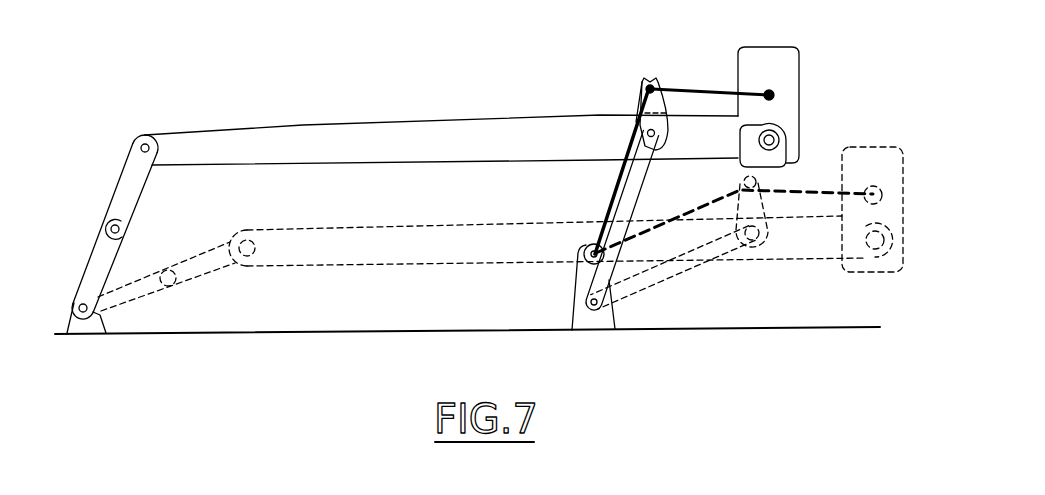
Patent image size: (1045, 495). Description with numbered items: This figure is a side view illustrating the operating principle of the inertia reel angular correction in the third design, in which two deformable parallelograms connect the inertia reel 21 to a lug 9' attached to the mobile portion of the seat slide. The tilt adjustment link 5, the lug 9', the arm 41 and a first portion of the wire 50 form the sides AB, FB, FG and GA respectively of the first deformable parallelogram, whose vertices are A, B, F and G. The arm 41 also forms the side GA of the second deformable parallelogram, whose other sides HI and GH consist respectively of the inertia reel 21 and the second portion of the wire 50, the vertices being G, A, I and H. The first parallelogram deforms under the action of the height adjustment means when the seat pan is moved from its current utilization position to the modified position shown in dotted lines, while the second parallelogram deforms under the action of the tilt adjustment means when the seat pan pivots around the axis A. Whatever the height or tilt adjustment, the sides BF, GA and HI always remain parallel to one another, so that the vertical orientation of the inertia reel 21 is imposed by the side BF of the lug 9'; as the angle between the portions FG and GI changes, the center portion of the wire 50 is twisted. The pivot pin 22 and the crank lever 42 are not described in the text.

The tilt adjustment link 5 is at (627, 180).
The lug 9' is at (567, 287).
The inertia reel 21 is at (790, 60).
The pivot pin 22 is at (774, 137).
The arm 41 is at (637, 98).
The crank lever 42 is at (654, 78).
The wire 50 is at (723, 91).
The point G is at (645, 80).
The point H is at (774, 93).
The point I is at (760, 140).
The axis A is at (657, 149).
The point F is at (588, 250).
The point B is at (596, 309).